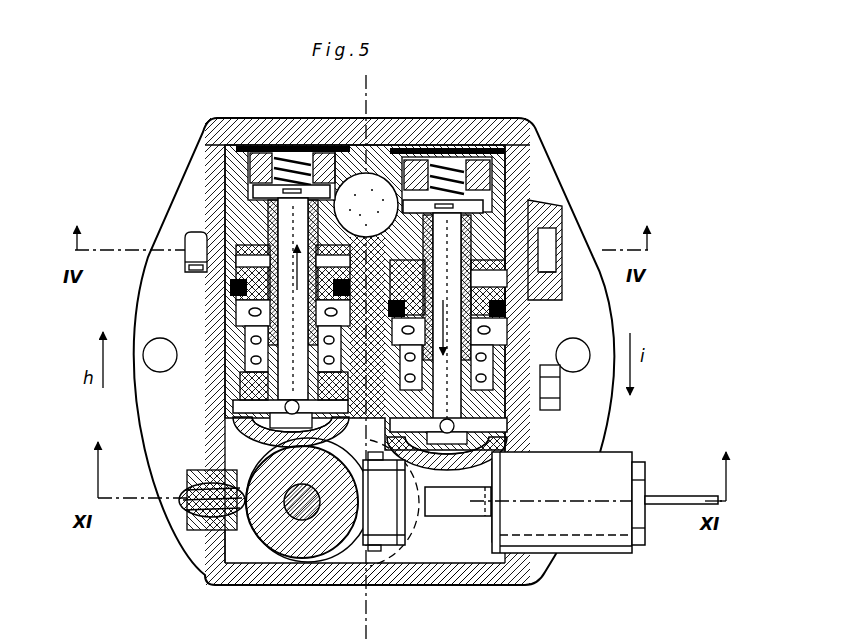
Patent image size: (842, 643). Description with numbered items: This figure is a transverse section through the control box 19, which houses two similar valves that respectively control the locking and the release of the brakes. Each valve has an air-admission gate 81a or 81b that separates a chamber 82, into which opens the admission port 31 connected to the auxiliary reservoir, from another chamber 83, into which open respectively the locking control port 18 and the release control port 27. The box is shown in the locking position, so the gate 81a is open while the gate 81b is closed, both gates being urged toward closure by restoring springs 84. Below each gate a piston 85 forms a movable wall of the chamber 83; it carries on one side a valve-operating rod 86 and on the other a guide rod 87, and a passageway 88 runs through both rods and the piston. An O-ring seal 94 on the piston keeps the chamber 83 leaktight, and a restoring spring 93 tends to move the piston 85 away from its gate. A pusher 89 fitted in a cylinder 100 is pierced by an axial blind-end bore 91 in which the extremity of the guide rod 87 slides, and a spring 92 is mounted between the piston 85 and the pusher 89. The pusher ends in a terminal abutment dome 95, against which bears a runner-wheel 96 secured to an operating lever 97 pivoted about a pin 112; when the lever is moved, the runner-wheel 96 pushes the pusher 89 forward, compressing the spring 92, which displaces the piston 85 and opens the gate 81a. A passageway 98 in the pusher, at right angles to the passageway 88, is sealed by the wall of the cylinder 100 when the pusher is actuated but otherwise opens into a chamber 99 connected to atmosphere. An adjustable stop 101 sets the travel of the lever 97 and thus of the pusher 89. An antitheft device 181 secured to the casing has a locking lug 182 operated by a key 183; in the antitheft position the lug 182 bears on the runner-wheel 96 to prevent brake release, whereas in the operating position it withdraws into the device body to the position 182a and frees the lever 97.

The control box 19 is at (183, 128).
The admission port 31 is at (380, 118).
The restoring spring 84 is at (299, 150).
The chamber 82 is at (236, 174).
The air-admission gate 81a is at (248, 197).
The air-admission gate 81b is at (486, 206).
The valve-operating rod 86 is at (240, 216).
The restoring spring 93 is at (200, 263).
The chamber 83 is at (192, 278).
The O-ring seal 94 is at (238, 288).
The piston 85 is at (243, 308).
The spring 92 is at (243, 326).
The locking control port 18 is at (293, 299).
The release control port 27 is at (447, 319).
The passageway 88 is at (300, 325).
The guide rod 87 is at (255, 378).
The pusher 89 is at (255, 396).
The passageway 98 is at (255, 418).
The cylinder 100 is at (368, 406).
The axial blind-end bore 91 is at (287, 426).
The terminal abutment dome 95 is at (326, 438).
The operating lever 97 is at (312, 520).
The pin 112 is at (372, 556).
The locking lug 182 is at (438, 506).
The withdrawn lug position 182a is at (490, 490).
The antitheft device 181 is at (585, 553).
The key 183 is at (665, 497).
The adjustable stop 101 is at (188, 506).
The runner-wheel 96 is at (268, 538).
The chamber 99 is at (476, 560).